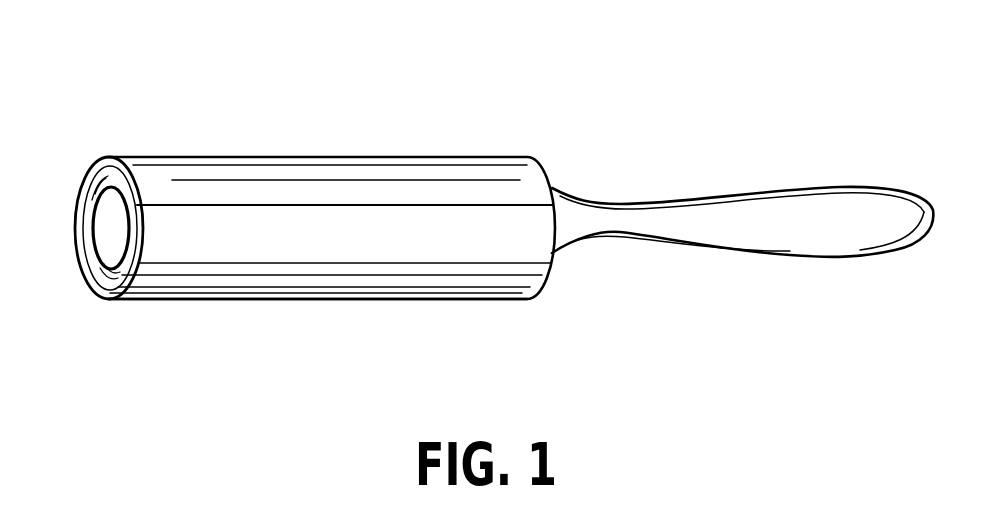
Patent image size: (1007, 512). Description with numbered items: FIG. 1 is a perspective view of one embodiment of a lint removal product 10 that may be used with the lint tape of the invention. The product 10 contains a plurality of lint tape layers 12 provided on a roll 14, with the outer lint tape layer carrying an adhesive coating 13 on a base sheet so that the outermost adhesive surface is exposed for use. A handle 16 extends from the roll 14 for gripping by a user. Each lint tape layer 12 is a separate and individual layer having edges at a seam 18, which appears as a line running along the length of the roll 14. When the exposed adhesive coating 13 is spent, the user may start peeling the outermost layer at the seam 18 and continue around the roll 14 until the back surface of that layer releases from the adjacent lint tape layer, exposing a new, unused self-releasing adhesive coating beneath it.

The lint removal product 10 is at (554, 95).
The lint tape layers 12 is at (96, 183).
The adhesive coating 13 is at (284, 173).
The roll 14 is at (337, 305).
The handle 16 is at (775, 208).
The seam 18 is at (384, 206).